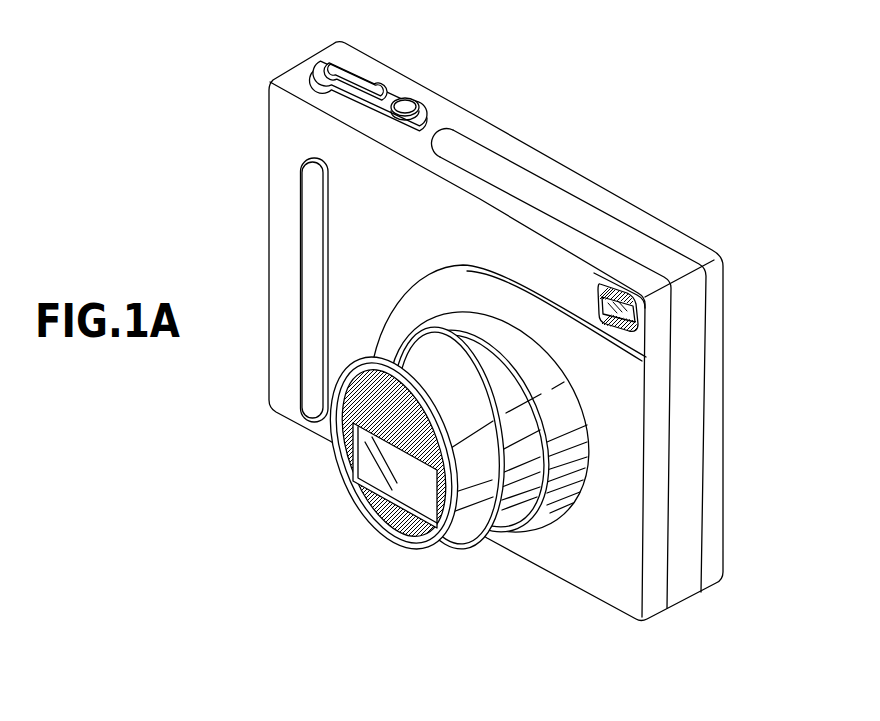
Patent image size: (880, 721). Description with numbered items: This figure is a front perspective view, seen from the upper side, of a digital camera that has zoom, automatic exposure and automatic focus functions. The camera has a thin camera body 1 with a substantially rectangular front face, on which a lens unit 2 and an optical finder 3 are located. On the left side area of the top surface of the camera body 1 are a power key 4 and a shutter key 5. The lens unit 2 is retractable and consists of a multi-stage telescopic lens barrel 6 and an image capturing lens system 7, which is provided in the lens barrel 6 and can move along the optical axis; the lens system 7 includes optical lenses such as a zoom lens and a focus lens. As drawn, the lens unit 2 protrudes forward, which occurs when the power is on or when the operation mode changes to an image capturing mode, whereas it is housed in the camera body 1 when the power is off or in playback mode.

The camera body 1 is at (713, 451).
The lens unit 2 is at (322, 482).
The optical finder 3 is at (596, 297).
The power key 4 is at (405, 105).
The shutter key 5 is at (352, 78).
The lens barrel 6 is at (351, 502).
The image capturing lens system 7 is at (382, 510).